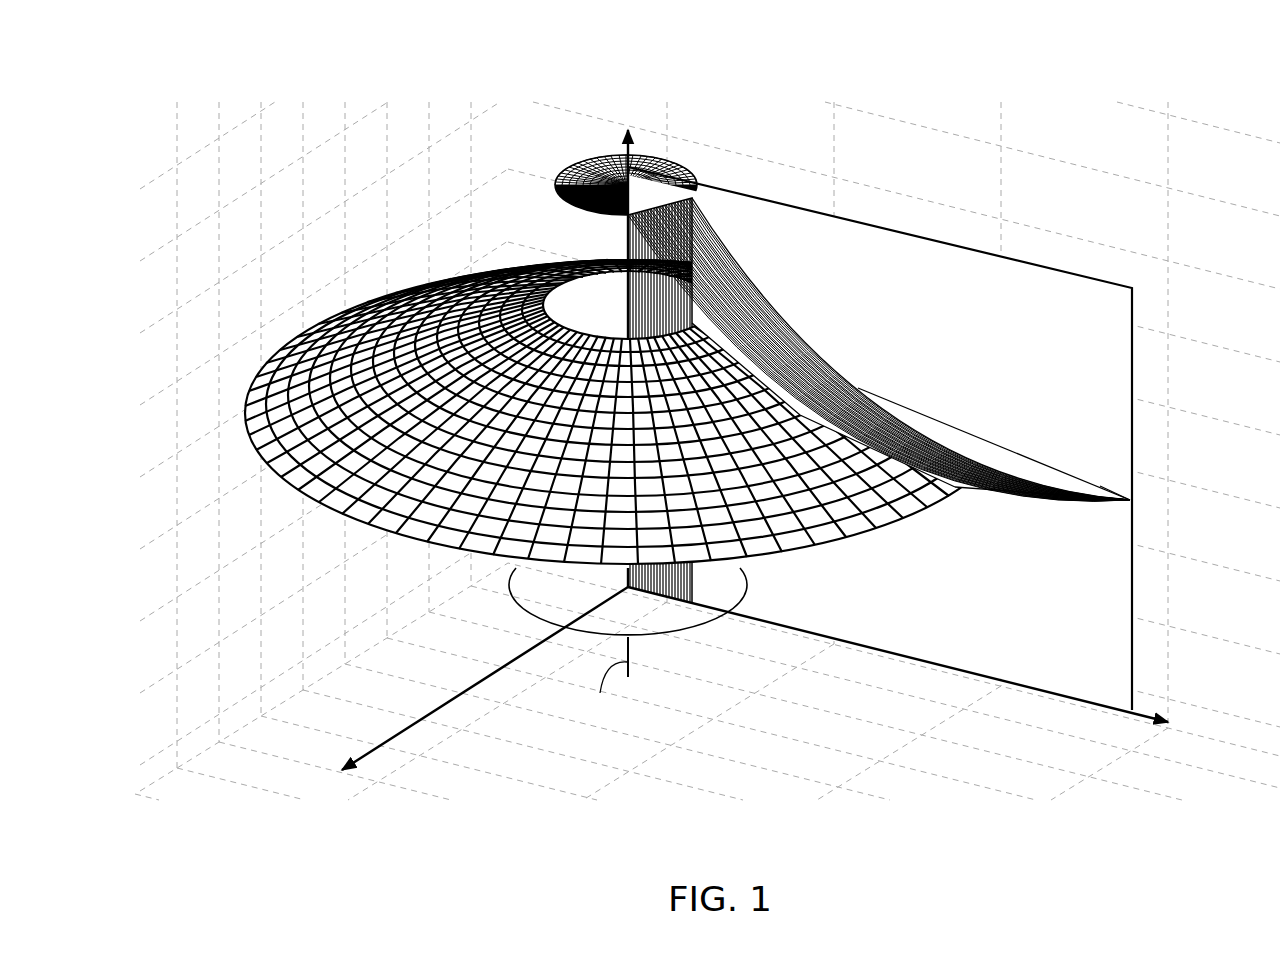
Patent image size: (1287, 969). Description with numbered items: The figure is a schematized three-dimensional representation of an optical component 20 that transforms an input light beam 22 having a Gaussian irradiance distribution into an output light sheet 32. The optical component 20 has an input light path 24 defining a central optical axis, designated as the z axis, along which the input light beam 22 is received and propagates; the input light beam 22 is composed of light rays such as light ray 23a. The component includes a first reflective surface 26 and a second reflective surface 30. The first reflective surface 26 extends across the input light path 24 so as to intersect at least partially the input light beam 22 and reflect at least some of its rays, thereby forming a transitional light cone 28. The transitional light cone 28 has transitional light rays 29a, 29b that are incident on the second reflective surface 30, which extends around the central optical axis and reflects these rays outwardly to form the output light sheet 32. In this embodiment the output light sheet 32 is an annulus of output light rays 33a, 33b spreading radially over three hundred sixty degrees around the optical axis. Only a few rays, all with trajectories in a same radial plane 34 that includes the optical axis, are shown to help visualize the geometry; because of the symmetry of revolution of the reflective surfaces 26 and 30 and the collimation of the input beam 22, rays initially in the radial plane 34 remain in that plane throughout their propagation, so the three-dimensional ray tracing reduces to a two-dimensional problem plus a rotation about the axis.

The optical component 20 is at (715, 78).
The input light beam 22 is at (671, 610).
The light ray 23a is at (688, 583).
The input light path 24 is at (657, 657).
The first reflective surface 26 is at (557, 188).
The transitional light cone 28 is at (753, 260).
The transitional light ray 29a is at (828, 357).
The transitional light ray 29b is at (994, 444).
The second reflective surface 30 is at (368, 305).
The output light sheet 32 is at (1102, 476).
The output light ray 33a is at (1030, 490).
The output light ray 33b is at (823, 405).
The radial plane 34 is at (1072, 275).